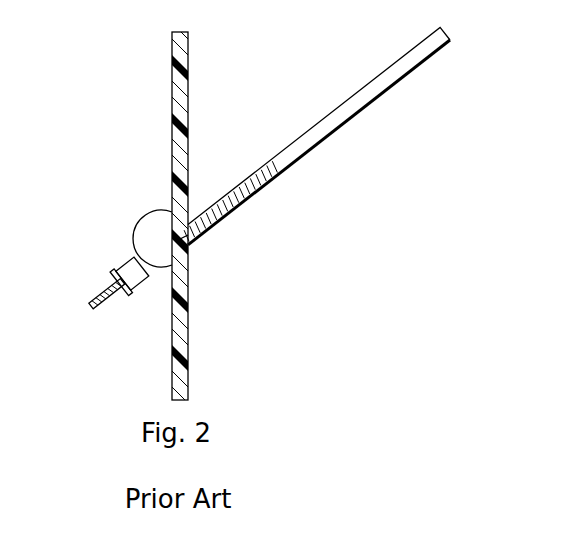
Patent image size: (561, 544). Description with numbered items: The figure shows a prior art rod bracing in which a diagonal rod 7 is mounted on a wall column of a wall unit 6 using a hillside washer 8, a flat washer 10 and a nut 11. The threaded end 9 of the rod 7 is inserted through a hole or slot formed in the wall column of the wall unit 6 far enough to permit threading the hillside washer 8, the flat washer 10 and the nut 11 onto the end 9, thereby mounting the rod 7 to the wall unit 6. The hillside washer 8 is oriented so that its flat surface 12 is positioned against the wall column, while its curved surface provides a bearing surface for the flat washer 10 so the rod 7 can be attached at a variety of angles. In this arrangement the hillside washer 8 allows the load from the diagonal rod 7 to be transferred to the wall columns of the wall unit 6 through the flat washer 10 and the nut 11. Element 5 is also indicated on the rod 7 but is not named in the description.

The panel 5 is at (354, 95).
The wall unit 6 is at (192, 351).
The rod 7 is at (318, 144).
The hillside washer 8 is at (143, 215).
The threaded end 9 is at (92, 311).
The flat washer 10 is at (136, 255).
The nut 11 is at (117, 264).
The flat surface 12 is at (192, 230).